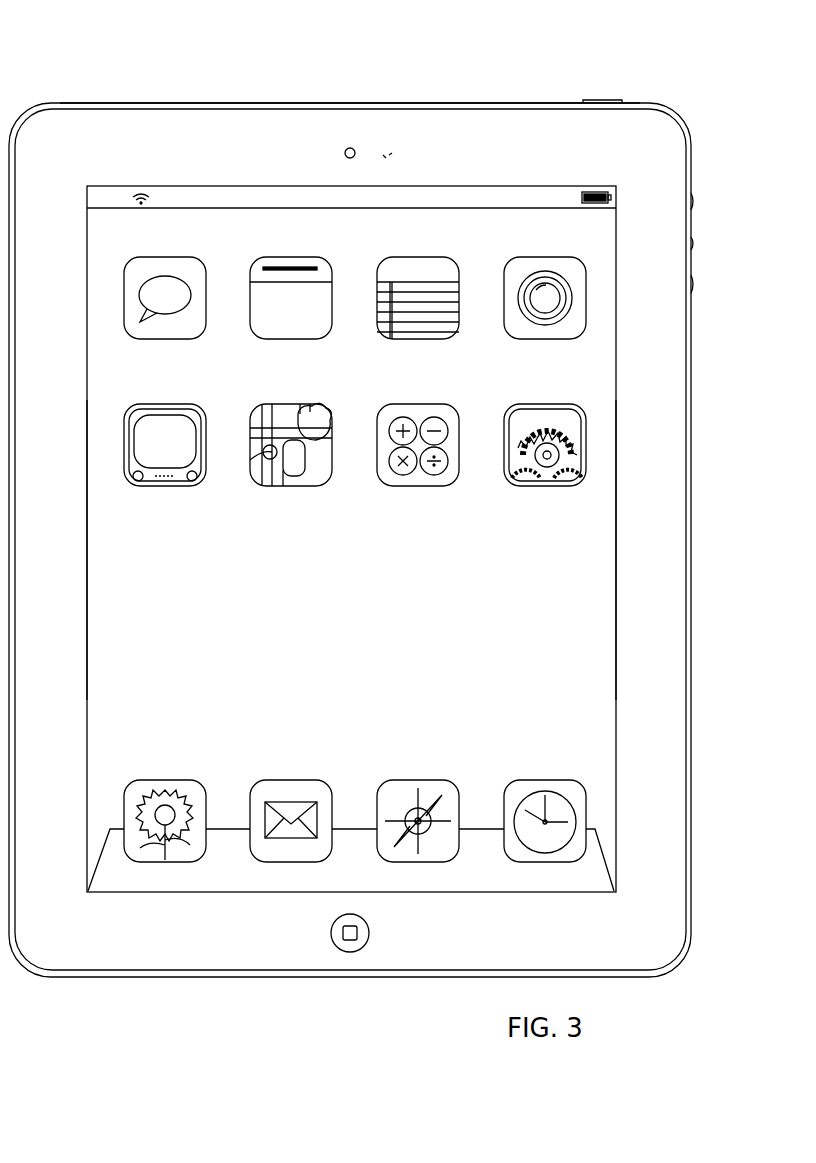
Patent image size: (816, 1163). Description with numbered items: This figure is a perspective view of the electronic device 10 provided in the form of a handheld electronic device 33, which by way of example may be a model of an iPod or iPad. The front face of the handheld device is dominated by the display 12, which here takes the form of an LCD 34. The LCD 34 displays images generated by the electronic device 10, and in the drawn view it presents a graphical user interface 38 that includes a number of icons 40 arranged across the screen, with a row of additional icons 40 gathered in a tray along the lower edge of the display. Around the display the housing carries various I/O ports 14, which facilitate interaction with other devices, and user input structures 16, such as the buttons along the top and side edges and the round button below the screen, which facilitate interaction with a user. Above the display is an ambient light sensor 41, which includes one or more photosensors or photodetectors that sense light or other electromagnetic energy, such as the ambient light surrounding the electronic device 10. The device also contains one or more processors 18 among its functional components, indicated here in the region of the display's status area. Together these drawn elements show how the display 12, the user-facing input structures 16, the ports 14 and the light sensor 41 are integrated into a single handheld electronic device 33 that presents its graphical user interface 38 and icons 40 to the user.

The electronic device 10 is at (139, 47).
The display 12 is at (581, 663).
The input/output (I/O) ports 14 is at (104, 103).
The input structures 16 is at (600, 100).
The processors 18 is at (467, 228).
The handheld electronic device 33 is at (379, 92).
The LCD 34 is at (602, 591).
The graphical user interface (GUI) 38 is at (125, 593).
The icons 40 is at (300, 257).
The ambient light sensor 41 is at (385, 150).